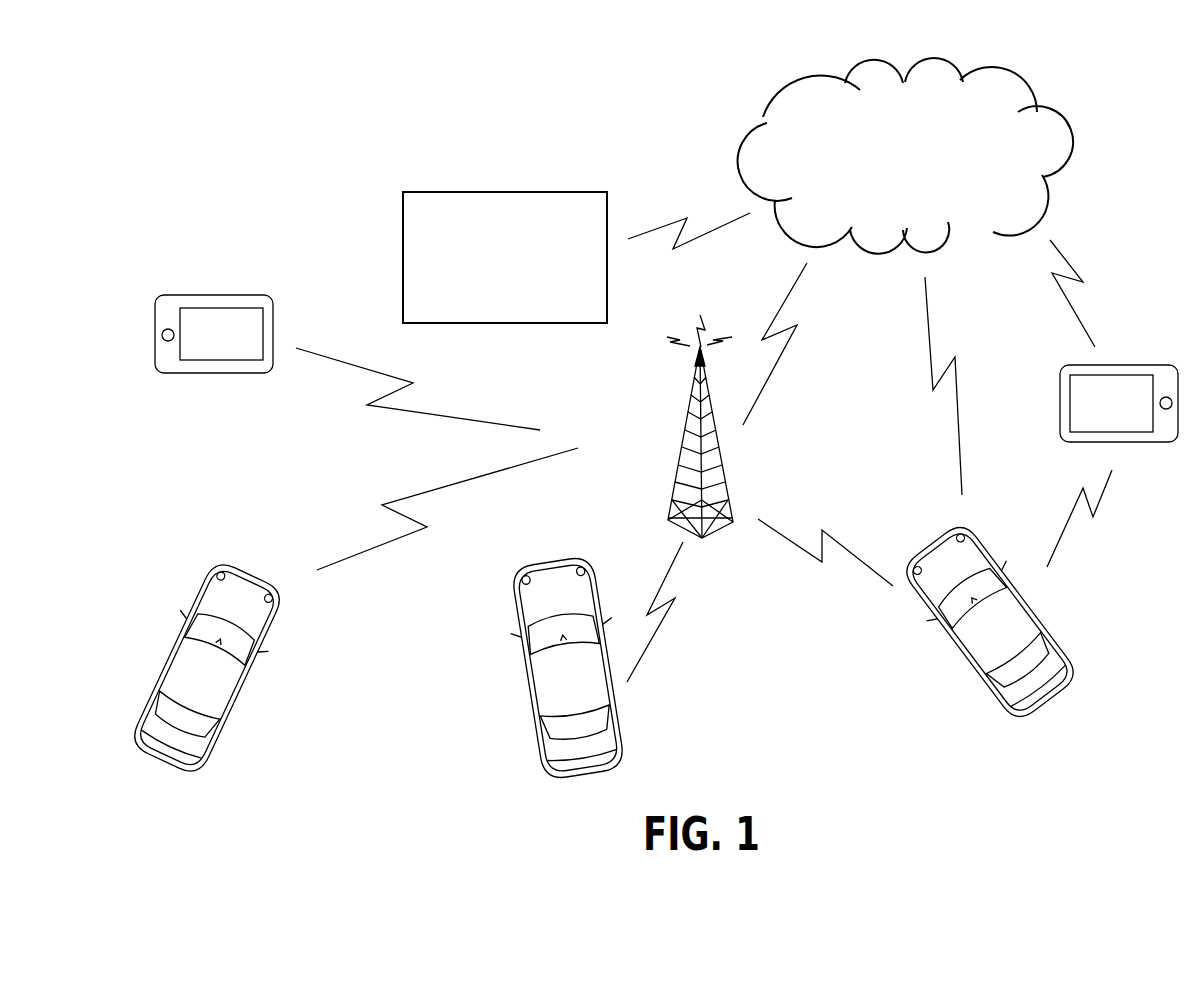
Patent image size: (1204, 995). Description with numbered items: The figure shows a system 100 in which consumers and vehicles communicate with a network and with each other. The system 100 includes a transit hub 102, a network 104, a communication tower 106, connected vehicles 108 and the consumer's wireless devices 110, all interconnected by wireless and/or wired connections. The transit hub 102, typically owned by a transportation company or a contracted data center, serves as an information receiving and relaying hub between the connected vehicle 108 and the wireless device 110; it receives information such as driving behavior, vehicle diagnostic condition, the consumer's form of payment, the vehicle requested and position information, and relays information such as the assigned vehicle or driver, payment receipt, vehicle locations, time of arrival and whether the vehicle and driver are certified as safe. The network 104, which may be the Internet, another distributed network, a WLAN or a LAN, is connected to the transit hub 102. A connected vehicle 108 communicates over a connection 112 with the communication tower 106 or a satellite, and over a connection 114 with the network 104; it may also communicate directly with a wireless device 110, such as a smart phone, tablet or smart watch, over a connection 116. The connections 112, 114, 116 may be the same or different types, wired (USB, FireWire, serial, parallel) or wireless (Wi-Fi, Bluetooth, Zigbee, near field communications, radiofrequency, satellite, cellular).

The system 100 is at (402, 63).
The transit hub 102 is at (553, 192).
The network 104 is at (1052, 118).
The communication tower 106 is at (687, 433).
The connected vehicle 108 is at (225, 563).
The wireless device 110 is at (247, 295).
The connection 112 is at (348, 556).
The connection 114 is at (677, 218).
The connection 116 is at (1097, 497).